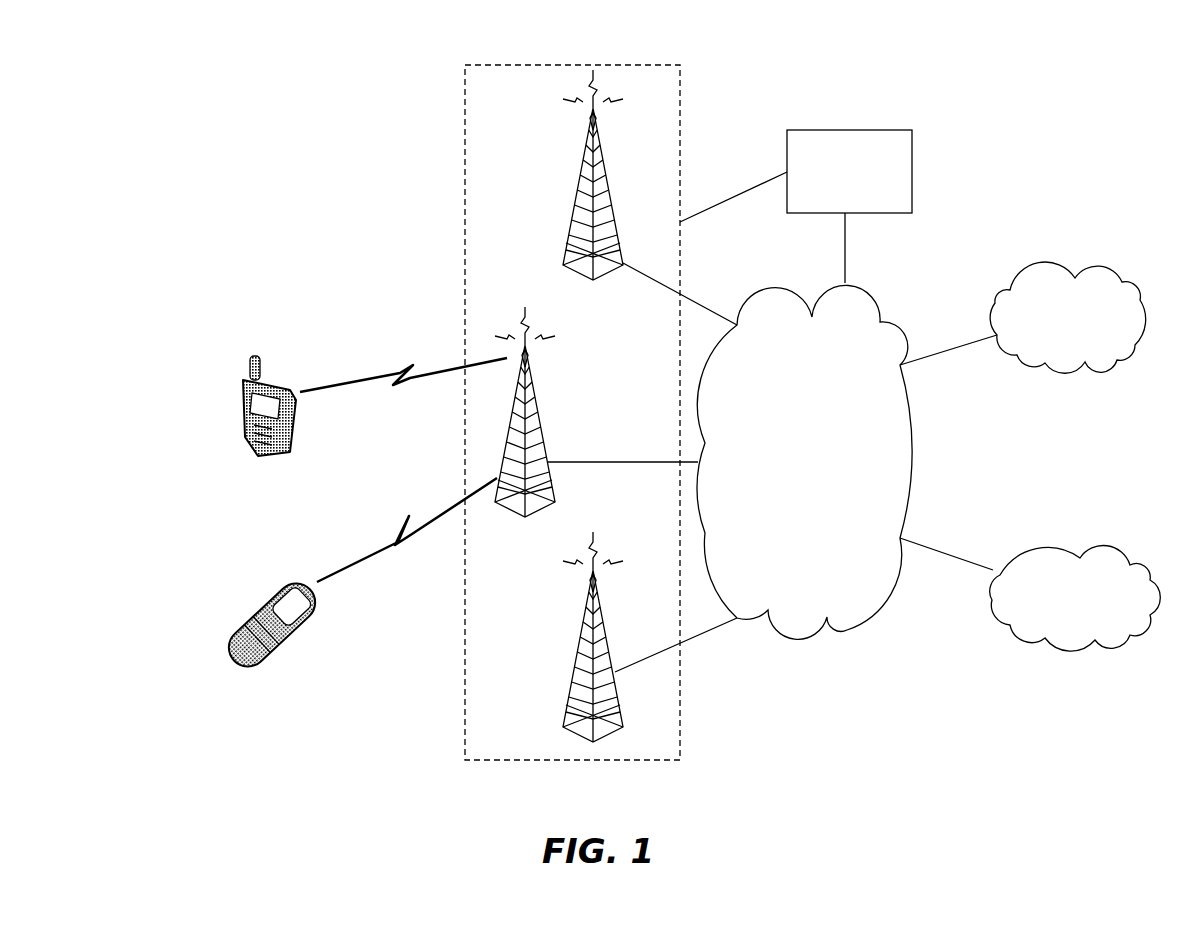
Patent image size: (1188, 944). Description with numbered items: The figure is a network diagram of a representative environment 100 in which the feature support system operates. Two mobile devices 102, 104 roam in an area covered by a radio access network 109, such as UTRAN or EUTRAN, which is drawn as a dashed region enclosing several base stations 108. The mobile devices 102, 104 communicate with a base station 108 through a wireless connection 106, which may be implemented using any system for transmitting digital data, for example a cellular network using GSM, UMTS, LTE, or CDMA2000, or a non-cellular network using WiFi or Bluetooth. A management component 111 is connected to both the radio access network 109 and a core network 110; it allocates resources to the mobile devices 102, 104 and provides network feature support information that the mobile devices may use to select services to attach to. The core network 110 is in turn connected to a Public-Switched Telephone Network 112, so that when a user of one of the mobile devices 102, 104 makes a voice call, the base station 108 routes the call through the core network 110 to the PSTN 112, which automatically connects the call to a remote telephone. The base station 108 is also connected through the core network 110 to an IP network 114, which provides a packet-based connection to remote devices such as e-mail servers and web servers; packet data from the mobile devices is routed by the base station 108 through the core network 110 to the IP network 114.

The representative environment 100 is at (338, 729).
The mobile device 102 is at (272, 593).
The mobile device 104 is at (242, 380).
The wireless connection 106 is at (407, 402).
The base station 108 is at (607, 173).
The radio access network 109 is at (680, 90).
The core network 110 is at (883, 322).
The management component 111 is at (885, 130).
The Public-Switched Telephone Network 112 is at (1103, 547).
The IP network 114 is at (1093, 268).